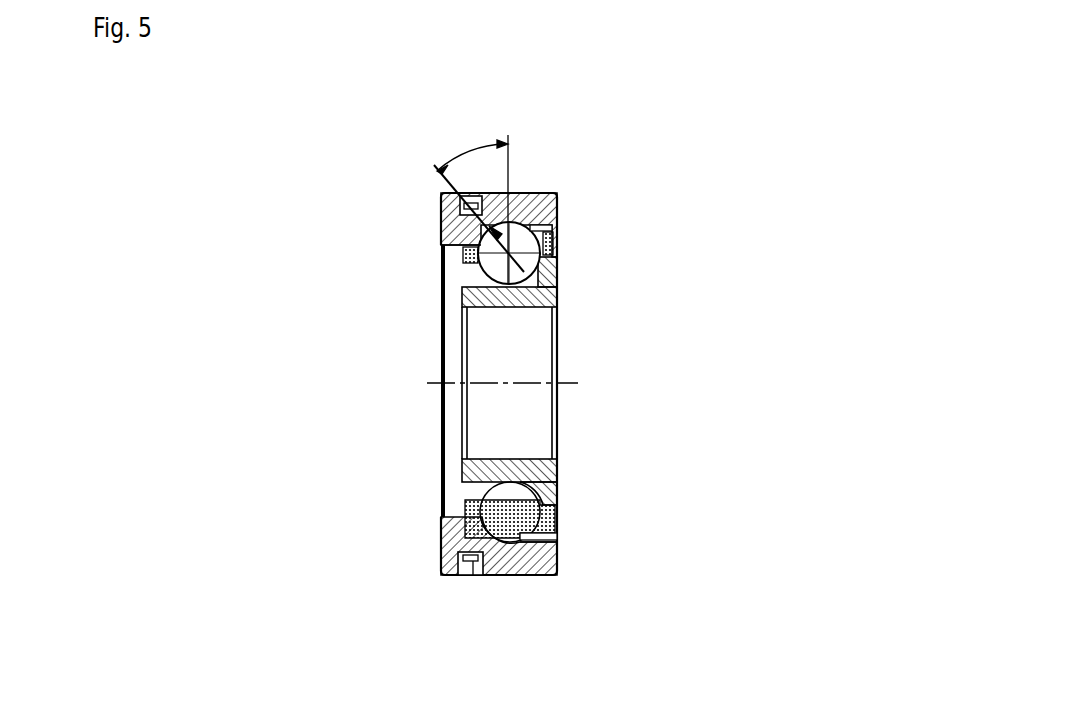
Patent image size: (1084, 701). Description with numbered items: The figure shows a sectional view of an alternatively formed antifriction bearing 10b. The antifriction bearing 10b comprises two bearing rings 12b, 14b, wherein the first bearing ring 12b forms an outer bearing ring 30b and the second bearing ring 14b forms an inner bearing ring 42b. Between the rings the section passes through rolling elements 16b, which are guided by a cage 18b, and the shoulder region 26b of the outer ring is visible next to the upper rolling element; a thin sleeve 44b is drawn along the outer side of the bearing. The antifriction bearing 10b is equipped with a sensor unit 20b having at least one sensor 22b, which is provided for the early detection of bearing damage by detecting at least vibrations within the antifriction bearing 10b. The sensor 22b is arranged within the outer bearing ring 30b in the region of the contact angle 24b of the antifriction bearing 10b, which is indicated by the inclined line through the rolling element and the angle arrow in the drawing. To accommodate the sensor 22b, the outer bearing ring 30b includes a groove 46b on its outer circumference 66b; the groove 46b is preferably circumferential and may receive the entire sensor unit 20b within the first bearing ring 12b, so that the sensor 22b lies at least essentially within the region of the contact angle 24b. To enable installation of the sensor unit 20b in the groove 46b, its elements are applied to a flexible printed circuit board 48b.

The antifriction bearing 10b is at (800, 175).
The first bearing ring 12b is at (603, 396).
The outer bearing ring 30b is at (557, 560).
The second bearing ring 14b is at (613, 381).
The inner bearing ring 42b is at (557, 479).
The rolling element (ball) 16b is at (557, 276).
The cage 18b is at (557, 522).
The sensor unit 20b is at (479, 197).
The sensor 22b is at (441, 196).
The contact angle 24b is at (465, 152).
The shoulder 26b is at (442, 240).
The sleeve 44b is at (429, 500).
The groove 46b is at (473, 575).
The flexible printed circuit board 48b is at (441, 563).
The outer circumference 66b is at (535, 575).